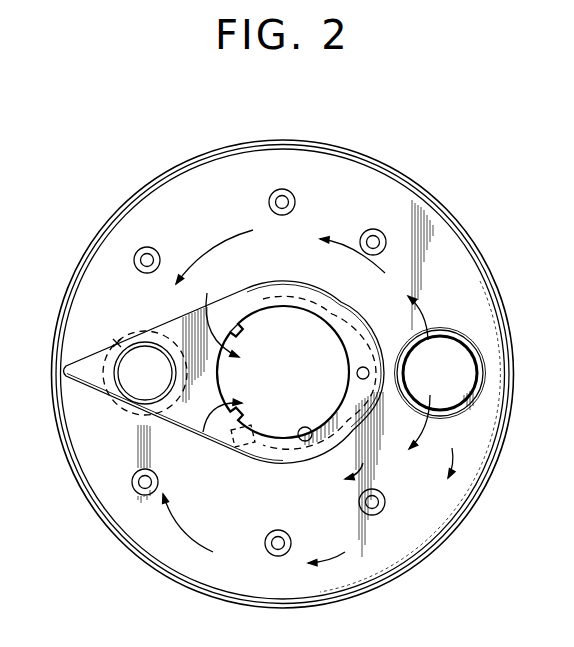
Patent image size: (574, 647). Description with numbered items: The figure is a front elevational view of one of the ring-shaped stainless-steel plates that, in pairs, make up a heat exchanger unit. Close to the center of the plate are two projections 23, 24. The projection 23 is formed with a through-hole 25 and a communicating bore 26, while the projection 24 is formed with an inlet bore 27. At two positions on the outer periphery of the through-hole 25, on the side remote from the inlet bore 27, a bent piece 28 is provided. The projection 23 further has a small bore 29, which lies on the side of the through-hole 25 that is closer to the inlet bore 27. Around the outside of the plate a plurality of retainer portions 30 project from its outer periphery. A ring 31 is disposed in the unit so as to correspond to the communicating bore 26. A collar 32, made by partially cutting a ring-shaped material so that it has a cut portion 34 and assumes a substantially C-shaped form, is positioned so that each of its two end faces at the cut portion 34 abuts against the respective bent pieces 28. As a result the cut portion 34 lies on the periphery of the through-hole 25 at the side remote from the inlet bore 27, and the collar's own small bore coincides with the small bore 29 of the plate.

The projection 23 is at (189, 433).
The projection 24 is at (443, 417).
The through-hole 25 is at (305, 441).
The communicating bore 26 is at (135, 386).
The inlet bore 27 is at (477, 359).
The bent piece 28 is at (242, 326).
The small bore 29 is at (368, 367).
The retainer portions 30 is at (134, 259).
The ring 31 is at (116, 342).
The collar 32 is at (252, 448).
The cut portion 34 is at (232, 325).